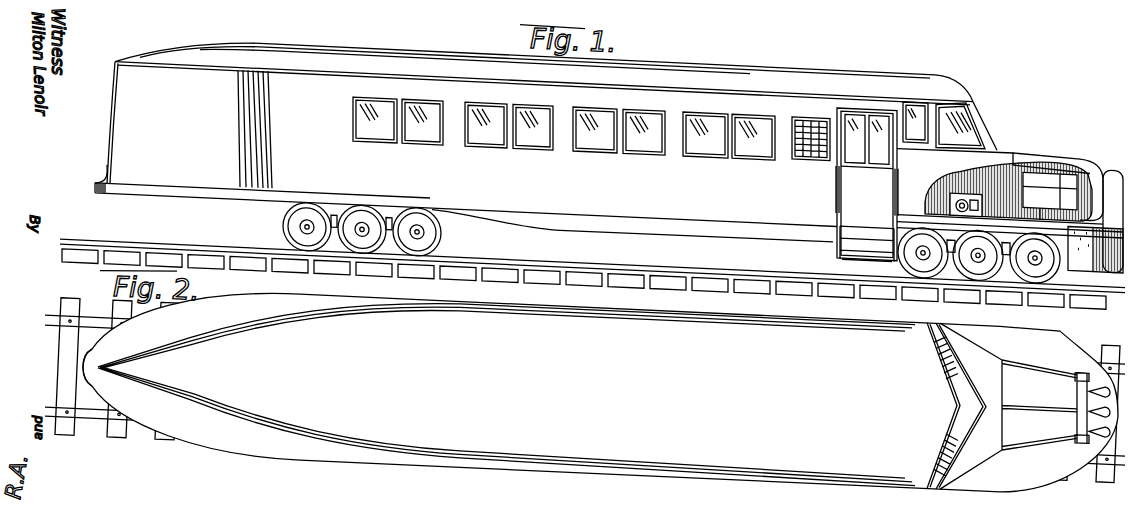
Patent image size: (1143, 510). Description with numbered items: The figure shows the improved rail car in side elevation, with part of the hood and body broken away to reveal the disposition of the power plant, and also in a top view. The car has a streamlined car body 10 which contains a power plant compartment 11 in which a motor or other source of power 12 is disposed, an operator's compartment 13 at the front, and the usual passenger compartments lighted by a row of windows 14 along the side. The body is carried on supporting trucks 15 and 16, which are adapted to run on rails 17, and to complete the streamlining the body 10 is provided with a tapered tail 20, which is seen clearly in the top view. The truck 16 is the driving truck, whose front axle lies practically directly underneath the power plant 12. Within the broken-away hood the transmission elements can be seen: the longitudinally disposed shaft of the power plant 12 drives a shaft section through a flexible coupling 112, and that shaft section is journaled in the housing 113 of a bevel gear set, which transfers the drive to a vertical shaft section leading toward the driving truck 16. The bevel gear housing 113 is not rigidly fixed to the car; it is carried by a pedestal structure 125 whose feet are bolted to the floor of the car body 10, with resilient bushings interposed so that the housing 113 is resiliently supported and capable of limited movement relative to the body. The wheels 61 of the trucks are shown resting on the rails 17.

In FIG. 1, the car body 10 is at (892, 44).
In FIG. 2, the car body 10 is at (615, 438).
In FIG. 1, the power plant compartment 11 is at (1030, 116).
In FIG. 1, the motor or other source of power 12 is at (1053, 135).
In FIG. 1, the operator's compartment 13 is at (970, 78).
In FIG. 2, the operator's compartment 13 is at (960, 346).
In FIG. 1, the windows 14 is at (605, 90).
In FIG. 1, the supporting truck 15 is at (386, 239).
In FIG. 1, the driving truck 16 is at (968, 276).
In FIG. 1, the rails 17 is at (255, 246).
In FIG. 2, the rails 17 is at (72, 325).
In FIG. 1, the tapered tail 20 is at (110, 156).
In FIG. 2, the tapered tail 20 is at (89, 359).
In FIG. 1, the wheels 61 is at (912, 219).
In FIG. 1, the flexible coupling 112 is at (1000, 153).
In FIG. 1, the bevel gear housing 113 is at (960, 138).
In FIG. 1, the pedestal structure 125 is at (941, 204).